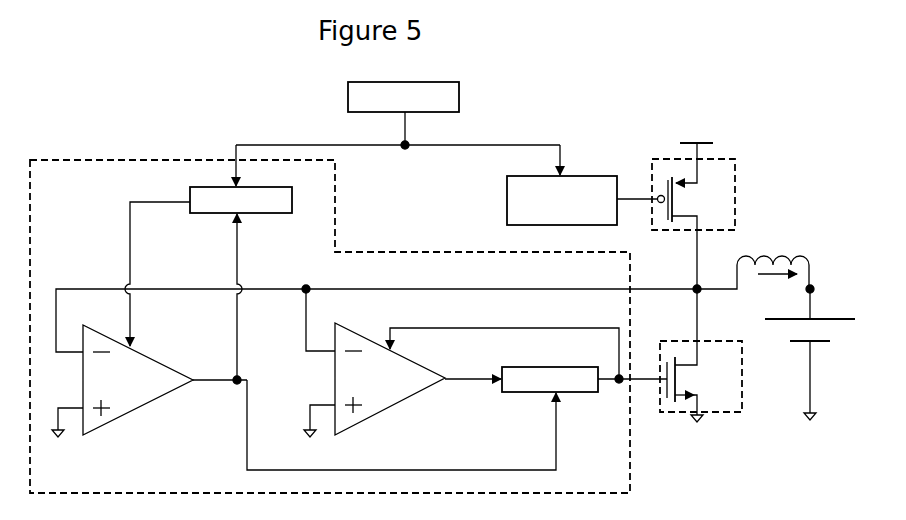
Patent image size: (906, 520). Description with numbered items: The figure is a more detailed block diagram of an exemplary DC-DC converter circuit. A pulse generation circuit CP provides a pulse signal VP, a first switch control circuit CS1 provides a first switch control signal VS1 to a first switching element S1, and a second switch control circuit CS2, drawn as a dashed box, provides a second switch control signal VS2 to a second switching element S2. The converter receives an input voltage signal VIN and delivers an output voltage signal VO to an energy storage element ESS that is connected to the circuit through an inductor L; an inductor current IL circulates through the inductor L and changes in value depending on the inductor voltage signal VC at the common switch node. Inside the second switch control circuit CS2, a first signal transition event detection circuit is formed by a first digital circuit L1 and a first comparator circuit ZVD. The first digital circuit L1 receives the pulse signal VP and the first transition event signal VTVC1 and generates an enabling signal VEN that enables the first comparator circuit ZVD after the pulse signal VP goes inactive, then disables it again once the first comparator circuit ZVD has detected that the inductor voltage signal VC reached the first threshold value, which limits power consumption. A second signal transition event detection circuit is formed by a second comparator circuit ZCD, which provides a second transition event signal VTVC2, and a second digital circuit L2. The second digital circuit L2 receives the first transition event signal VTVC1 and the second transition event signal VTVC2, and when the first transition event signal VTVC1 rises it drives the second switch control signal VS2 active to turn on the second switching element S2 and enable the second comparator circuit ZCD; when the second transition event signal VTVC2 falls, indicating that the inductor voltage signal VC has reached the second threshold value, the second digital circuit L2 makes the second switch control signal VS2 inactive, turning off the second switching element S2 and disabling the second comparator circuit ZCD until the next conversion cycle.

The second switch control circuit CS2 is at (102, 156).
The pulse generation circuit CP is at (403, 97).
The pulse signal VP is at (398, 149).
The first digital circuit L1 is at (241, 200).
The enabling signal VEN is at (157, 262).
The first comparator circuit ZVD is at (179, 363).
The first transition event signal VTVC1 is at (212, 385).
The inductor voltage signal VC is at (501, 280).
The second comparator circuit ZCD is at (374, 363).
The second digital circuit L2 is at (504, 360).
The second transition event signal VTVC2 is at (472, 388).
The second switch control signal VS2 is at (645, 393).
The second switching element S2 is at (701, 355).
The first switching element S1 is at (693, 216).
The input voltage signal VIN is at (696, 131).
The first switch control circuit CS1 is at (562, 200).
The first switch control signal VS1 is at (645, 191).
The inductor L is at (753, 260).
The inductor current IL is at (777, 287).
The output voltage signal VO is at (825, 290).
The energy storage element ESS is at (817, 354).